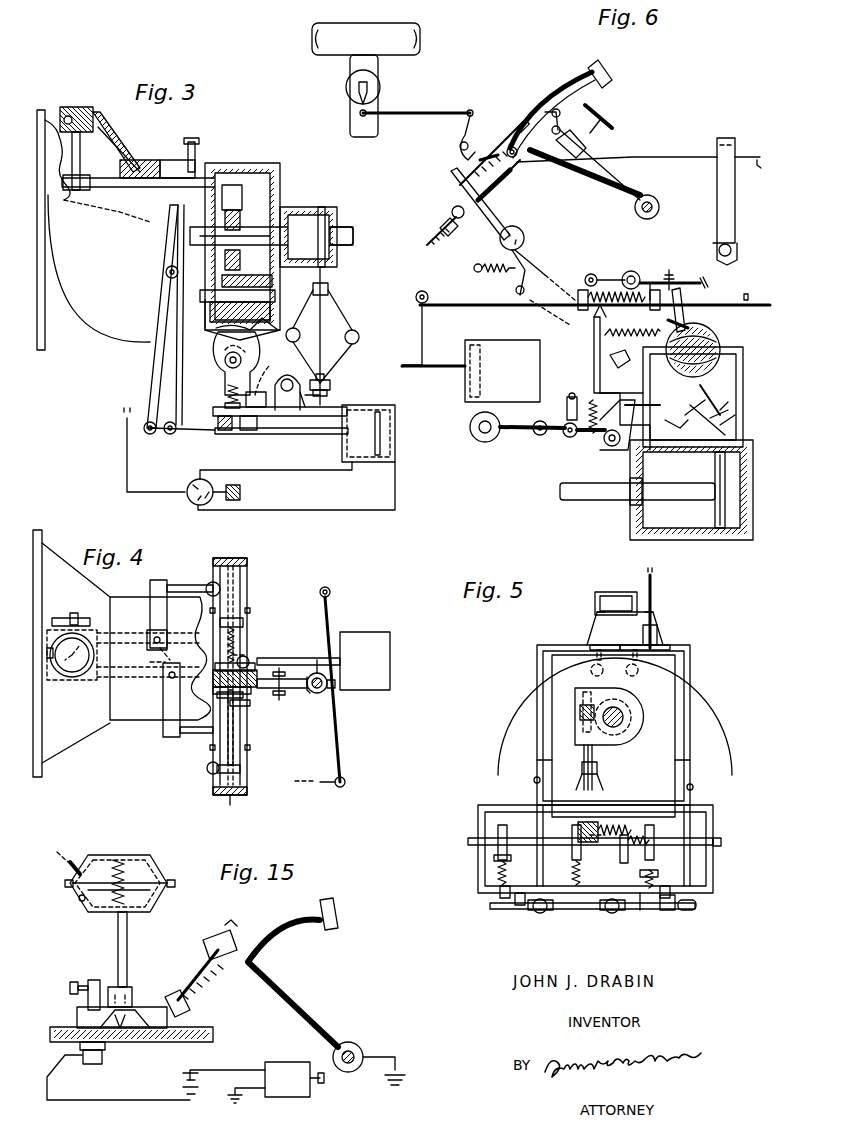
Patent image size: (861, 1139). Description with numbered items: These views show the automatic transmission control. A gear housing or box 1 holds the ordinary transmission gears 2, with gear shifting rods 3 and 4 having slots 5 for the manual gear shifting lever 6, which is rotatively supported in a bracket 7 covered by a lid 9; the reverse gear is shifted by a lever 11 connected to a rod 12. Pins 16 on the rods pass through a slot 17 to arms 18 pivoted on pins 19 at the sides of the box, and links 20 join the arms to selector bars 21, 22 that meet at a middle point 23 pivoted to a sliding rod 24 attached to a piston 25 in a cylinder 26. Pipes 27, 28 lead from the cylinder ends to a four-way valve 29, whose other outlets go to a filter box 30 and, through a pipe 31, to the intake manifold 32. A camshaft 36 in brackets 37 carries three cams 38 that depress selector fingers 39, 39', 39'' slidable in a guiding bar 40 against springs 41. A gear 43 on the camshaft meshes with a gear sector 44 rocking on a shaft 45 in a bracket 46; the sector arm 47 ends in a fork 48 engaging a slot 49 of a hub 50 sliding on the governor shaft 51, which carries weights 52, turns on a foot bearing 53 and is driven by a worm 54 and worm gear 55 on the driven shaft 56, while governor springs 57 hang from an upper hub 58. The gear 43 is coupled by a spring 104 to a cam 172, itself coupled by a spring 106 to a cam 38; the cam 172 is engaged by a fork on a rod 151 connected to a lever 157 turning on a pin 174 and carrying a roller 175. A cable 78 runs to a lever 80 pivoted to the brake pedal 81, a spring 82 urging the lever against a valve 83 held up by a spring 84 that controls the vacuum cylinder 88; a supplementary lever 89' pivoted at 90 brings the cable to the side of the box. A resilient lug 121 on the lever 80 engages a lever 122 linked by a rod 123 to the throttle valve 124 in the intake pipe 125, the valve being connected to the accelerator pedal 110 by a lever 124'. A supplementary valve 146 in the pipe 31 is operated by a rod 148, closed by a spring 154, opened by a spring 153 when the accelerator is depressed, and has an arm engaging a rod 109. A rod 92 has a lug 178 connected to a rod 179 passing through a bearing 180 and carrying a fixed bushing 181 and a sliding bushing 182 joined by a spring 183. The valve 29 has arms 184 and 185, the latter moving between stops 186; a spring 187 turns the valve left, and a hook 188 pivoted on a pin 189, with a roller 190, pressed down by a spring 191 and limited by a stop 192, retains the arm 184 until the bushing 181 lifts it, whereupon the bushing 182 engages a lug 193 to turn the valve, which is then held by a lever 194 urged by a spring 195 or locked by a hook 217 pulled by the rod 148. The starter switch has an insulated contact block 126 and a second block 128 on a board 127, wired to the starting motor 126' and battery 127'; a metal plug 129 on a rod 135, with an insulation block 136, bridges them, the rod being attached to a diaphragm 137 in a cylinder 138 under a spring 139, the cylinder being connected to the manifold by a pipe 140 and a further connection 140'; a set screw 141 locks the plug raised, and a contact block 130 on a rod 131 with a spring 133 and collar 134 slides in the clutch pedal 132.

In FIG. 3, the gear housing 1 is at (240, 165).
In FIG. 6, the gear housing 1 is at (672, 157).
In FIG. 4, the gear housing 1 is at (120, 597).
In FIG. 5, the gear housing 1 is at (668, 660).
In FIG. 3, the transmission gears 2 is at (222, 200).
In FIG. 3, the gear shifting rod 3 is at (135, 162).
In FIG. 4, the gear shifting rod 3 is at (42, 636).
In FIG. 5, the gear shifting rod 3 is at (640, 670).
In FIG. 4, the gear shifting rod 4 is at (47, 672).
In FIG. 5, the gear shifting rod 4 is at (589, 670).
In FIG. 3, the slots 5 is at (70, 190).
In FIG. 4, the slots 5 is at (72, 655).
In FIG. 3, the manual gear shifting lever 6 is at (120, 138).
In FIG. 3, the bracket 7 is at (113, 128).
In FIG. 5, the bracket 7 is at (590, 630).
In FIG. 3, the lid 9 is at (70, 108).
In FIG. 4, the lid 9 is at (47, 655).
In FIG. 5, the lid 9 is at (615, 592).
In FIG. 4, the lever 11 is at (80, 620).
In FIG. 5, the lever 11 is at (652, 628).
In FIG. 5, the rod 12 is at (653, 595).
In FIG. 3, the pins 16 is at (192, 140).
In FIG. 6, the pins 16 is at (726, 138).
In FIG. 4, the pins 16 is at (160, 660).
In FIG. 5, the pins 16 is at (603, 645).
In FIG. 3, the slot 17 is at (168, 160).
In FIG. 3, the arms 18 is at (168, 236).
In FIG. 6, the arms 18 is at (737, 156).
In FIG. 4, the arms 18 is at (160, 580).
In FIG. 5, the arms 18 is at (540, 690).
In FIG. 3, the pins 19 is at (166, 276).
In FIG. 6, the pins 19 is at (732, 248).
In FIG. 5, the pins 19 is at (534, 780).
In FIG. 3, the links 20 is at (190, 432).
In FIG. 4, the links 20 is at (198, 586).
In FIG. 4, the selector bar 21 is at (240, 605).
In FIG. 5, the selector bar 21 is at (640, 910).
In FIG. 3, the selector bar 22 is at (226, 430).
In FIG. 4, the selector bar 22 is at (240, 712).
In FIG. 5, the selector bar 22 is at (592, 916).
In FIG. 3, the middle point 23 is at (250, 430).
In FIG. 4, the middle point 23 is at (253, 664).
In FIG. 3, the sliding rod 24 is at (302, 434).
In FIG. 6, the sliding rod 24 is at (572, 500).
In FIG. 4, the sliding rod 24 is at (295, 658).
In FIG. 5, the sliding rod 24 is at (608, 909).
In FIG. 3, the piston 25 is at (382, 430).
In FIG. 6, the piston 25 is at (715, 520).
In FIG. 3, the cylinder 26 is at (360, 405).
In FIG. 6, the cylinder 26 is at (753, 480).
In FIG. 4, the cylinder 26 is at (370, 632).
In FIG. 3, the pipe 27 is at (292, 472).
In FIG. 6, the pipe 27 is at (650, 428).
In FIG. 3, the pipe 28 is at (395, 490).
In FIG. 6, the pipe 28 is at (738, 412).
In FIG. 3, the four-way valve 29 is at (195, 504).
In FIG. 6, the four-way valve 29 is at (718, 338).
In FIG. 3, the filter box 30 is at (240, 490).
In FIG. 3, the pipe 31 is at (127, 468).
In FIG. 6, the pipe 31 is at (450, 172).
In FIG. 6, the intake manifold 32 is at (320, 55).
In FIG. 3, the camshaft 36 is at (225, 362).
In FIG. 4, the camshaft 36 is at (232, 558).
In FIG. 5, the camshaft 36 is at (721, 842).
In FIG. 3, the brackets 37 is at (247, 329).
In FIG. 4, the brackets 37 is at (247, 567).
In FIG. 5, the brackets 37 is at (713, 870).
In FIG. 3, the cams 38 is at (257, 355).
In FIG. 4, the cams 38 is at (243, 623).
In FIG. 5, the cams 38 is at (498, 830).
In FIG. 3, the selector finger 39 is at (264, 410).
In FIG. 5, the selector finger 39 is at (672, 912).
In FIG. 5, the selector finger 39' is at (480, 865).
In FIG. 5, the selector finger 39'' is at (549, 917).
In FIG. 3, the guiding bar 40 is at (206, 398).
In FIG. 4, the guiding bar 40 is at (248, 738).
In FIG. 5, the guiding bar 40 is at (512, 900).
In FIG. 5, the springs 41 is at (496, 876).
In FIG. 4, the gear 43 is at (213, 684).
In FIG. 5, the gear 43 is at (595, 822).
In FIG. 3, the gear sector 44 is at (267, 377).
In FIG. 4, the gear sector 44 is at (242, 678).
In FIG. 3, the shaft 45 is at (288, 385).
In FIG. 4, the shaft 45 is at (283, 695).
In FIG. 3, the bracket 46 is at (260, 398).
In FIG. 3, the sector arm 47 is at (302, 400).
In FIG. 3, the fork 48 is at (325, 377).
In FIG. 4, the fork 48 is at (320, 693).
In FIG. 3, the slot 49 is at (330, 385).
In FIG. 4, the slot 49 is at (312, 695).
In FIG. 3, the hub 50 is at (330, 397).
In FIG. 4, the hub 50 is at (335, 690).
In FIG. 3, the vertical shaft 51 is at (323, 310).
In FIG. 4, the vertical shaft 51 is at (320, 655).
In FIG. 5, the vertical shaft 51 is at (587, 790).
In FIG. 3, the weights 52 is at (355, 330).
In FIG. 3, the foot bearing 53 is at (317, 411).
In FIG. 3, the worm 54 is at (337, 220).
In FIG. 5, the worm 54 is at (580, 715).
In FIG. 3, the worm gear 55 is at (332, 212).
In FIG. 5, the worm gear 55 is at (633, 705).
In FIG. 3, the driven shaft 56 is at (353, 236).
In FIG. 5, the driven shaft 56 is at (624, 715).
In FIG. 3, the governor springs 57 is at (342, 345).
In FIG. 5, the governor springs 57 is at (603, 785).
In FIG. 3, the upper hub 58 is at (328, 288).
In FIG. 5, the upper hub 58 is at (597, 768).
In FIG. 6, the cable 78 is at (503, 190).
In FIG. 4, the cable 78 is at (322, 785).
In FIG. 6, the lever 80 is at (482, 184).
In FIG. 6, the brake pedal 81 is at (608, 72).
In FIG. 6, the spring 82 is at (519, 171).
In FIG. 6, the valve 83 is at (452, 218).
In FIG. 6, the spring 84 is at (430, 240).
In FIG. 6, the vacuum cylinder 88 is at (508, 340).
In FIG. 4, the supplementary lever 89' is at (348, 689).
In FIG. 4, the pivot 90 is at (330, 592).
In FIG. 6, the rod 92 is at (450, 364).
In FIG. 4, the spring 104 is at (245, 650).
In FIG. 5, the spring 104 is at (603, 851).
In FIG. 5, the spring 106 is at (640, 860).
In FIG. 6, the rod 109 is at (594, 174).
In FIG. 6, the accelerator pedal 110 is at (598, 112).
In FIG. 6, the resilient lug 121 is at (490, 158).
In FIG. 6, the lever 122 is at (465, 125).
In FIG. 6, the rod 123 is at (414, 112).
In FIG. 6, the throttle valve 124 is at (344, 89).
In FIG. 6, the lever 124' is at (595, 106).
In FIG. 6, the intake pipe 125 is at (352, 135).
In FIG. 15, the insulated contact block 126 is at (99, 1017).
In FIG. 15, the starting motor 126' is at (276, 1070).
In FIG. 15, the board 127 is at (150, 1032).
In FIG. 15, the battery 127' is at (156, 1077).
In FIG. 15, the second block 128 is at (148, 1042).
In FIG. 15, the metal plug 129 is at (118, 1045).
In FIG. 15, the contact block 130 is at (190, 1005).
In FIG. 15, the rod 131 is at (237, 935).
In FIG. 15, the clutch pedal 132 is at (265, 983).
In FIG. 15, the spring 133 is at (195, 970).
In FIG. 15, the collar 134 is at (218, 940).
In FIG. 15, the rod 135 is at (127, 950).
In FIG. 15, the insulation block 136 is at (132, 996).
In FIG. 15, the diaphragm 137 is at (150, 880).
In FIG. 15, the cylinder 138 is at (155, 902).
In FIG. 15, the spring 139 is at (138, 856).
In FIG. 15, the pipe 140 is at (83, 851).
In FIG. 15, the tube 140' is at (65, 906).
In FIG. 15, the set screw 141 is at (70, 986).
In FIG. 6, the supplementary valve 146 is at (525, 236).
In FIG. 6, the rod 148 is at (540, 285).
In FIG. 6, the rod 151 is at (574, 396).
In FIG. 6, the spring 153 is at (520, 190).
In FIG. 6, the spring 154 is at (497, 272).
In FIG. 6, the lever 157 is at (515, 432).
In FIG. 4, the cam 172 is at (215, 662).
In FIG. 5, the cam 172 is at (622, 865).
In FIG. 6, the pin 174 is at (540, 436).
In FIG. 6, the roller 175 is at (475, 438).
In FIG. 6, the lug 178 is at (425, 338).
In FIG. 6, the rod 179 is at (483, 306).
In FIG. 6, the bearing 180 is at (752, 296).
In FIG. 6, the bushing 181 is at (556, 316).
In FIG. 6, the bushing 182 is at (657, 280).
In FIG. 6, the spring 183 is at (605, 310).
In FIG. 6, the arm 184 is at (684, 300).
In FIG. 6, the arm 185 is at (693, 420).
In FIG. 6, the stops 186 is at (671, 382).
In FIG. 6, the spring 187 is at (632, 339).
In FIG. 6, the hook 188 is at (688, 280).
In FIG. 6, the pin 189 is at (596, 275).
In FIG. 6, the roller 190 is at (633, 272).
In FIG. 6, the spring 191 is at (677, 267).
In FIG. 6, the stop 192 is at (712, 282).
In FIG. 6, the lug 193 is at (690, 323).
In FIG. 6, the lever 194 is at (656, 414).
In FIG. 6, the spring 195 is at (590, 437).
In FIG. 6, the hook 217 is at (730, 416).